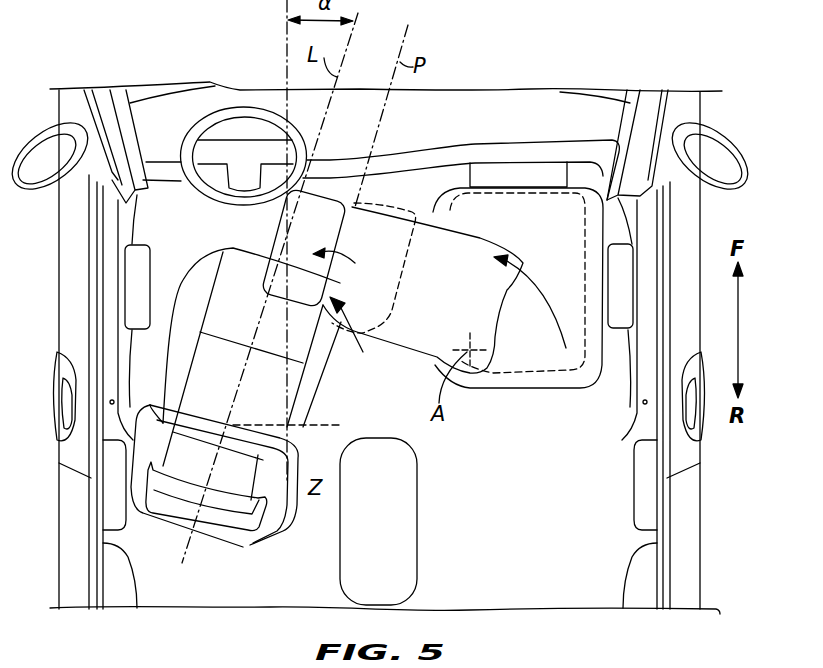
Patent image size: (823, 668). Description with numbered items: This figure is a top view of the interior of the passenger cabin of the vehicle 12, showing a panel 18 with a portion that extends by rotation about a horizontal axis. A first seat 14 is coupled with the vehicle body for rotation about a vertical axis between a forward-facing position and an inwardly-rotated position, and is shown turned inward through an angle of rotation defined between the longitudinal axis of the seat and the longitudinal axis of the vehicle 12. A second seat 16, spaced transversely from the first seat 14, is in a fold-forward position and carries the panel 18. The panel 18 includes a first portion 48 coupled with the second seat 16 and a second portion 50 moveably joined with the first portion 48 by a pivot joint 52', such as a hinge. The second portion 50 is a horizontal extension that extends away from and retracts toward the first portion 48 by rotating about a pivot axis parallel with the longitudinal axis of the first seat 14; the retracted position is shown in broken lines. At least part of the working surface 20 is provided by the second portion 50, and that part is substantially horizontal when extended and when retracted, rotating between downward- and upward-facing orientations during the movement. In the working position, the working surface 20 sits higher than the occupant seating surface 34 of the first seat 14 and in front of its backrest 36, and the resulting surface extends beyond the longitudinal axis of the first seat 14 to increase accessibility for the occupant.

The vehicle 12 is at (121, 66).
The first seat 14 is at (256, 393).
The second seat 16 is at (540, 182).
The panel 18 is at (394, 172).
The working surface 20 is at (438, 292).
The occupant seating surface 34 is at (229, 381).
The backrest 36 is at (277, 503).
The first portion 48 is at (486, 236).
The second portion 50 is at (260, 292).
The pivot joint 52' is at (356, 341).